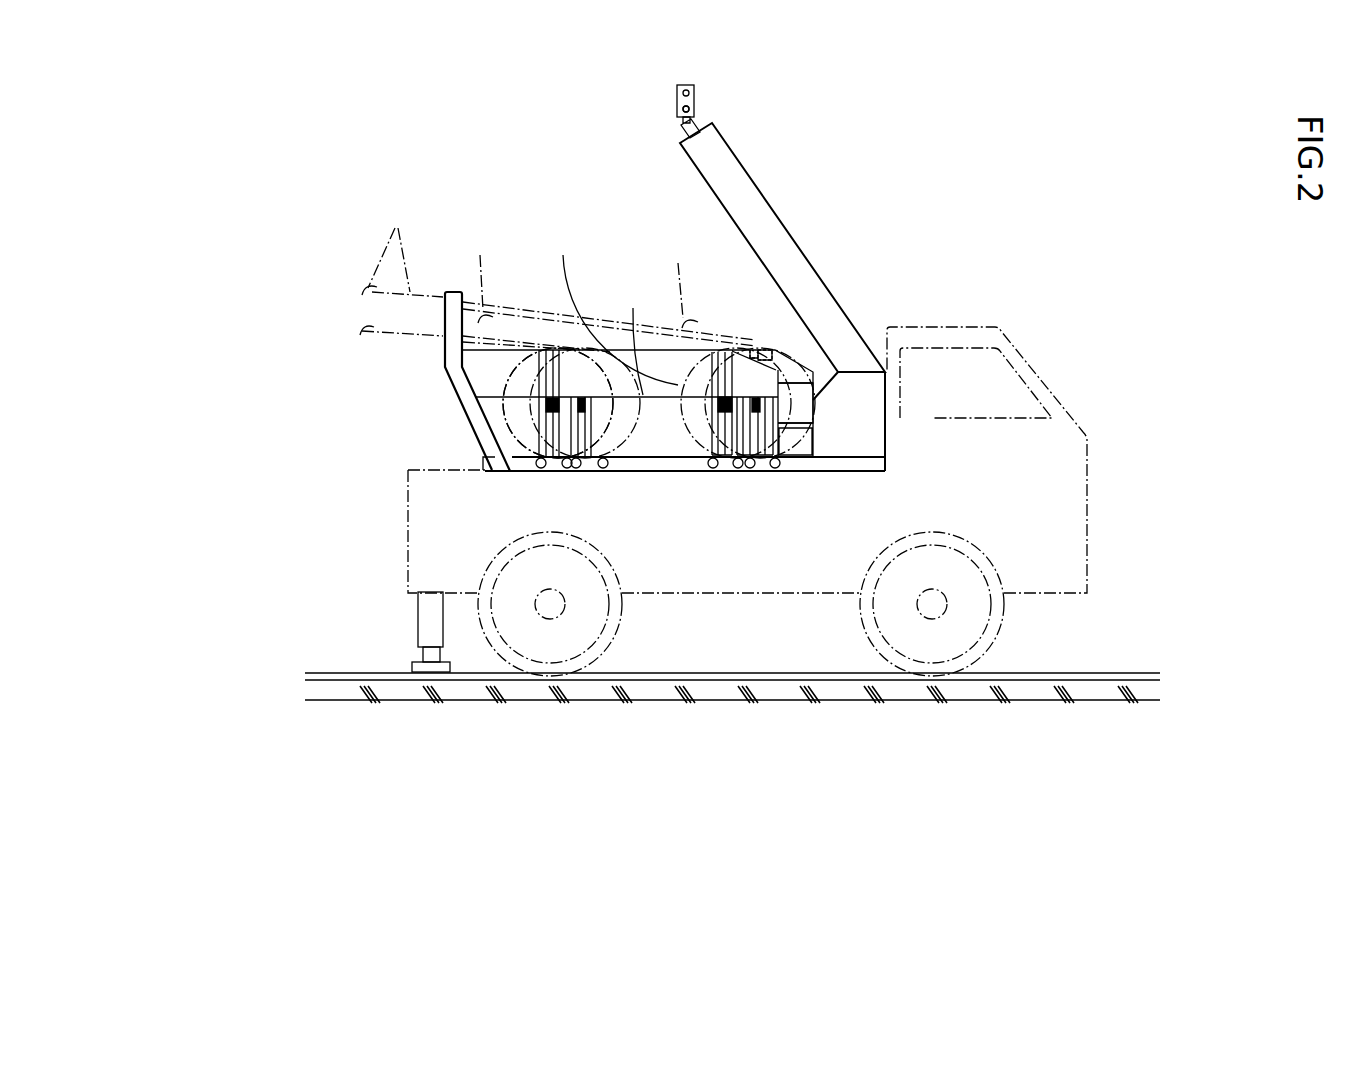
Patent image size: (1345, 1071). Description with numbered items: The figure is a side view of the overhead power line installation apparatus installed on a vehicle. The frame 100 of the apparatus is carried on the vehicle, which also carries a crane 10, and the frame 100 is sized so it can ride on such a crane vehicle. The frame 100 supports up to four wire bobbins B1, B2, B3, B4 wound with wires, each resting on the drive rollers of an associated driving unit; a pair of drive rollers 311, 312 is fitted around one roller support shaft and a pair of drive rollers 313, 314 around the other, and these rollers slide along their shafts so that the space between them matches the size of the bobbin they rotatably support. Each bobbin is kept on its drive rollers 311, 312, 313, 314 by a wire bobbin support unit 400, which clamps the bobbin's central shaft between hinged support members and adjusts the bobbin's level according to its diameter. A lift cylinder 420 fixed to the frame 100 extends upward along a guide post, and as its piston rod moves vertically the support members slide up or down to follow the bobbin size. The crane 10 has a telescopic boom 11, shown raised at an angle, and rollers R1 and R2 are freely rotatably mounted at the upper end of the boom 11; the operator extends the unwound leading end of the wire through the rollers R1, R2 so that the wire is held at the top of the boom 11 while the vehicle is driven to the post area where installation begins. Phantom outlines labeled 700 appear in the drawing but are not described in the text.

The crane 10 is at (725, 257).
The telescopic boom 11 is at (740, 182).
The roller R1 is at (688, 85).
The roller R2 is at (694, 107).
The frame 100 is at (665, 472).
The drive roller 311 is at (397, 445).
The drive roller 312 is at (540, 464).
The drive roller 313 is at (434, 507).
The drive roller 314 is at (578, 465).
The wire bobbin support unit 400 is at (782, 340).
The lift cylinder 420 is at (762, 470).
The rod gripper 700 is at (557, 275).
The wire bobbin B1 is at (515, 372).
The wire bobbin B2 is at (633, 308).
The wire bobbin B3 is at (592, 360).
The wire bobbin B4 is at (805, 368).